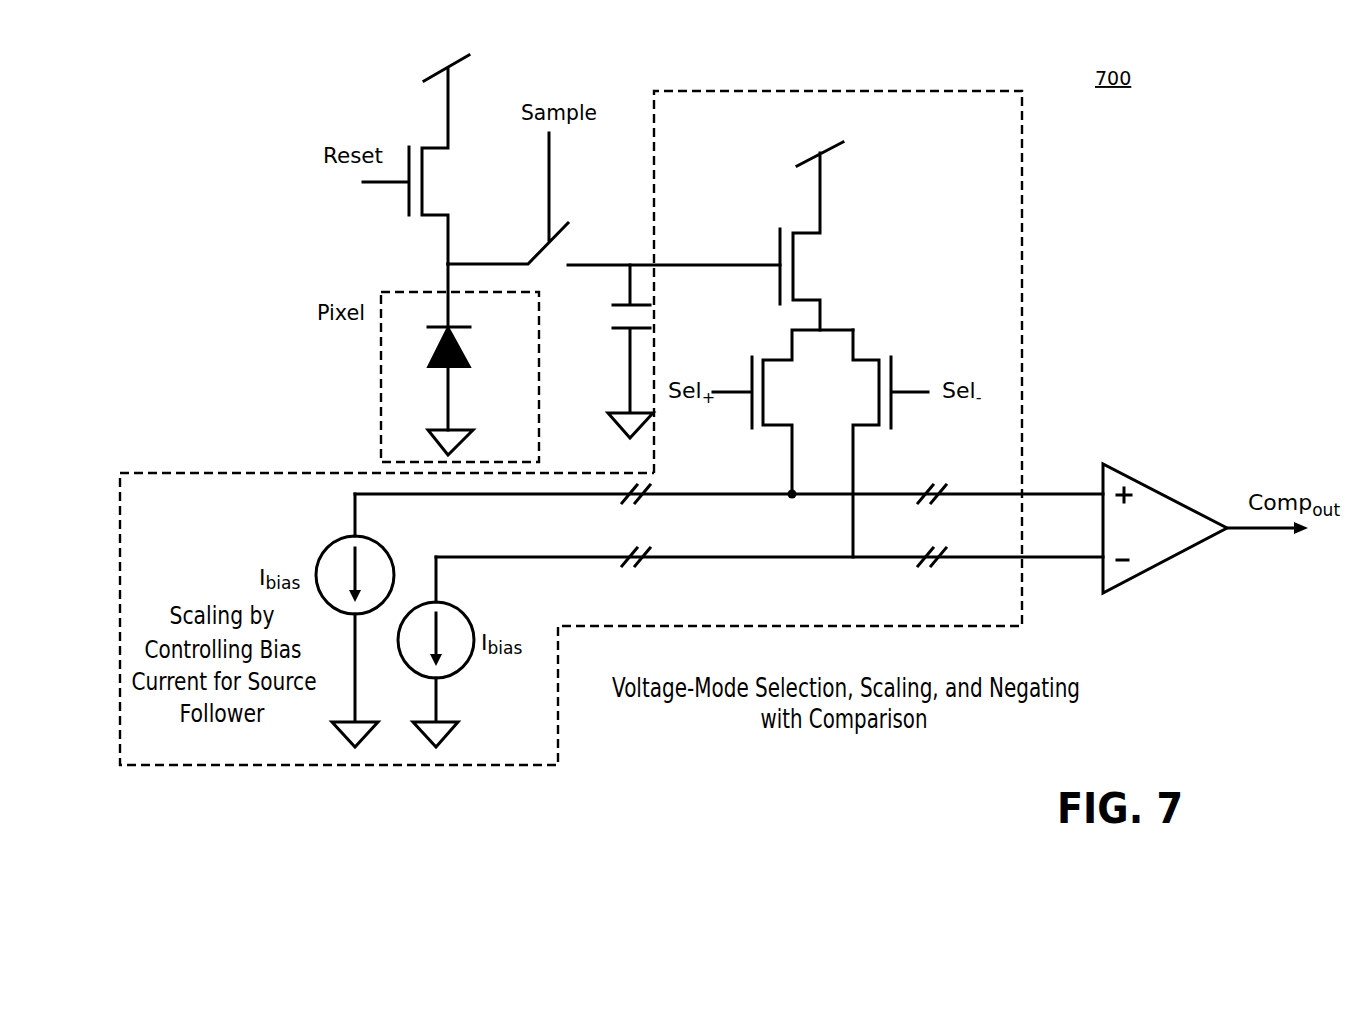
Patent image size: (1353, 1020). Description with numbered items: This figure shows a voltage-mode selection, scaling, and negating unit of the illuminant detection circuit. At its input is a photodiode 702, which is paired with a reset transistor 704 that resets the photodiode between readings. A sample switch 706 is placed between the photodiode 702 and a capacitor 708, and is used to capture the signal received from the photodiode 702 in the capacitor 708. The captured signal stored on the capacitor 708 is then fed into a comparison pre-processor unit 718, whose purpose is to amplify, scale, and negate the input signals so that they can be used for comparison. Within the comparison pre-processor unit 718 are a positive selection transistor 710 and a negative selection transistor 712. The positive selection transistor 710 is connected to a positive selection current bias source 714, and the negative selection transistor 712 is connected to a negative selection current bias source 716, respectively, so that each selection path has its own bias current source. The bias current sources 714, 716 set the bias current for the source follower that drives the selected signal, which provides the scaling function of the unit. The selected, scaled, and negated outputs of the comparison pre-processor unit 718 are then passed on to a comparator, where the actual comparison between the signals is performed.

The photodiode 702 is at (470, 356).
The reset transistor 704 is at (424, 186).
The sample switch 706 is at (565, 257).
The capacitor 708 is at (613, 328).
The positive selection transistor 710 is at (777, 362).
The negative selection transistor 712 is at (862, 358).
The positive selection current bias source 714 is at (378, 543).
The negative selection current bias source 716 is at (466, 609).
The comparison pre-processor unit 718 is at (975, 92).